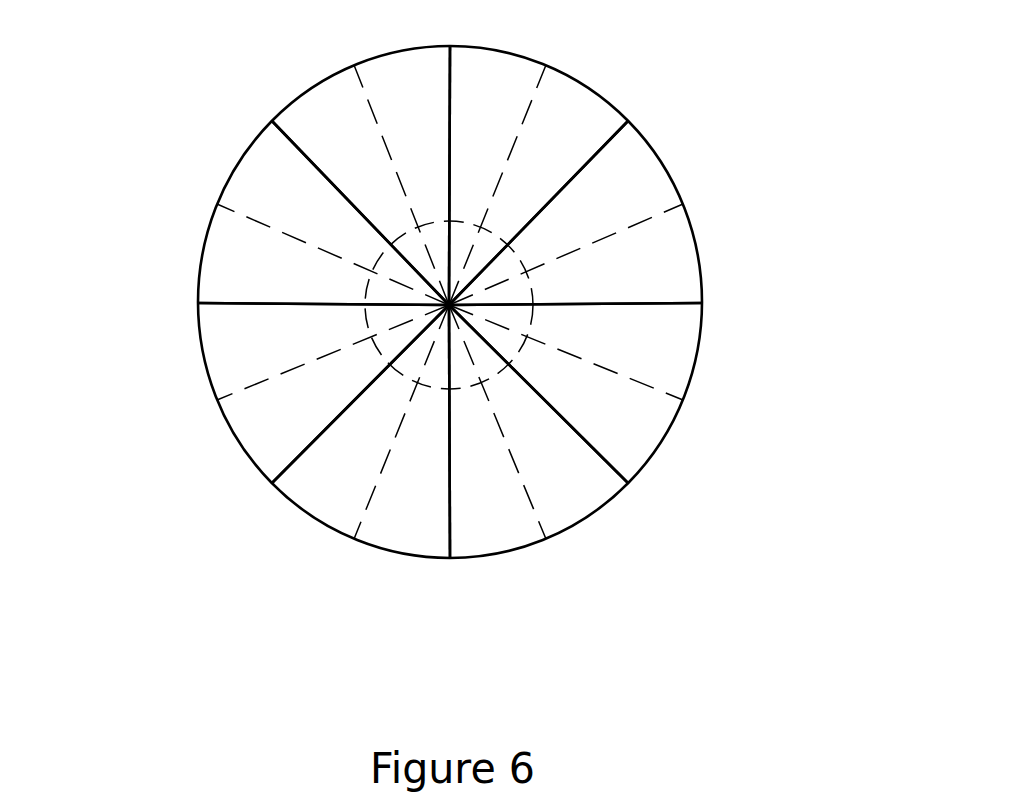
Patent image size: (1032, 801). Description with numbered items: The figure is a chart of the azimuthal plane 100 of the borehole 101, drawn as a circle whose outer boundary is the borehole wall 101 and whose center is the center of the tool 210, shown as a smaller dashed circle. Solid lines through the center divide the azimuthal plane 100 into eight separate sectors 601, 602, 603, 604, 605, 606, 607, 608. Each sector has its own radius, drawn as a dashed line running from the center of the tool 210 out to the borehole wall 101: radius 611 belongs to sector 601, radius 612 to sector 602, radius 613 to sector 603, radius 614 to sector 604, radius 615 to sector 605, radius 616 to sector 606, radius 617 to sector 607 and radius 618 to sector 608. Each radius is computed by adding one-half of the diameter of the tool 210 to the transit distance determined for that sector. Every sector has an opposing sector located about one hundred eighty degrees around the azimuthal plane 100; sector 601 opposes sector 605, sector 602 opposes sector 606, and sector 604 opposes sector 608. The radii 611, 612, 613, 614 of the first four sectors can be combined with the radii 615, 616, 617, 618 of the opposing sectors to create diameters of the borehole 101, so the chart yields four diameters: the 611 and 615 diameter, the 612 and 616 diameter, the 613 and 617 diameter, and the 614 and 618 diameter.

The azimuthal plane 100 is at (737, 78).
The borehole 101 is at (258, 137).
The tool 210 is at (518, 255).
The sector 601 is at (538, 175).
The sector 602 is at (575, 213).
The sector 603 is at (575, 393).
The sector 604 is at (538, 431).
The sector 605 is at (361, 431).
The sector 606 is at (323, 393).
The sector 607 is at (323, 213).
The sector 608 is at (361, 175).
The radius 611 is at (525, 112).
The radius 612 is at (620, 236).
The radius 613 is at (623, 372).
The radius 614 is at (522, 488).
The radius 615 is at (373, 497).
The radius 616 is at (255, 380).
The radius 617 is at (293, 246).
The radius 618 is at (373, 110).